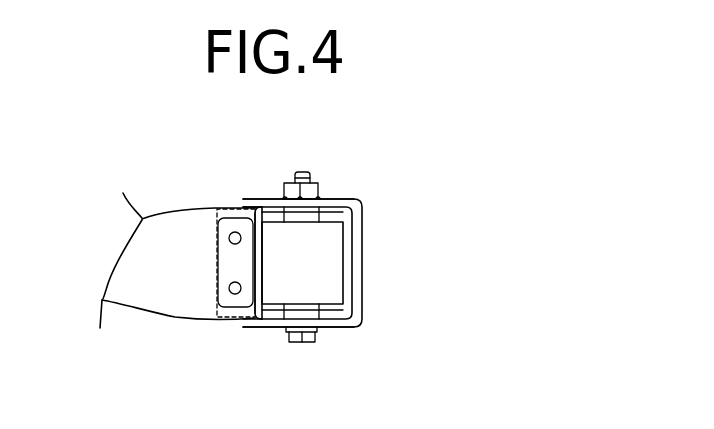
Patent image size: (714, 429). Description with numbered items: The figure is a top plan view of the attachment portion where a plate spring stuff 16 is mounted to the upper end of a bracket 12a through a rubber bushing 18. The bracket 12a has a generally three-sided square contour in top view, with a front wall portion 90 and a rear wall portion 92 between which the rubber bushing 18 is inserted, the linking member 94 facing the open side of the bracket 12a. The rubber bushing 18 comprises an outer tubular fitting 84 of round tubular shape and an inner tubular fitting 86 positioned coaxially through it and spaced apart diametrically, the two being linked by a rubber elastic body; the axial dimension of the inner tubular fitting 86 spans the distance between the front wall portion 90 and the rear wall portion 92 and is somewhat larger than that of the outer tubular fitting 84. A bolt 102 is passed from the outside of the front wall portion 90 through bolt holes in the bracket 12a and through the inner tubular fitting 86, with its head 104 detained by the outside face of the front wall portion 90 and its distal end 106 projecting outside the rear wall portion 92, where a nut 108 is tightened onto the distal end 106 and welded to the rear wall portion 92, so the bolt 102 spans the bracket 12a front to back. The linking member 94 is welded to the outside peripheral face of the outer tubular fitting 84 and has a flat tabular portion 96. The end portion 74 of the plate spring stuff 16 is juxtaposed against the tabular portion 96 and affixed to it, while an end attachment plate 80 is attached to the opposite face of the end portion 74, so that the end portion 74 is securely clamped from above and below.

The plate spring stuff 16 is at (159, 192).
The end portion 74 is at (173, 292).
The end attachment plate 80 is at (227, 268).
The rubber bushing 18 is at (350, 204).
The bracket 12a is at (369, 228).
The rear wall portion 92 is at (327, 202).
The linking member 94 is at (263, 206).
The front wall portion 90 is at (327, 324).
The outer tubular fitting 84 is at (333, 272).
The inner tubular fitting 86 is at (312, 315).
The nut 108 is at (295, 192).
The distal end 106 is at (303, 172).
The bolt 102 is at (293, 345).
The head 104 is at (307, 344).
The tabular portion 96 is at (256, 287).